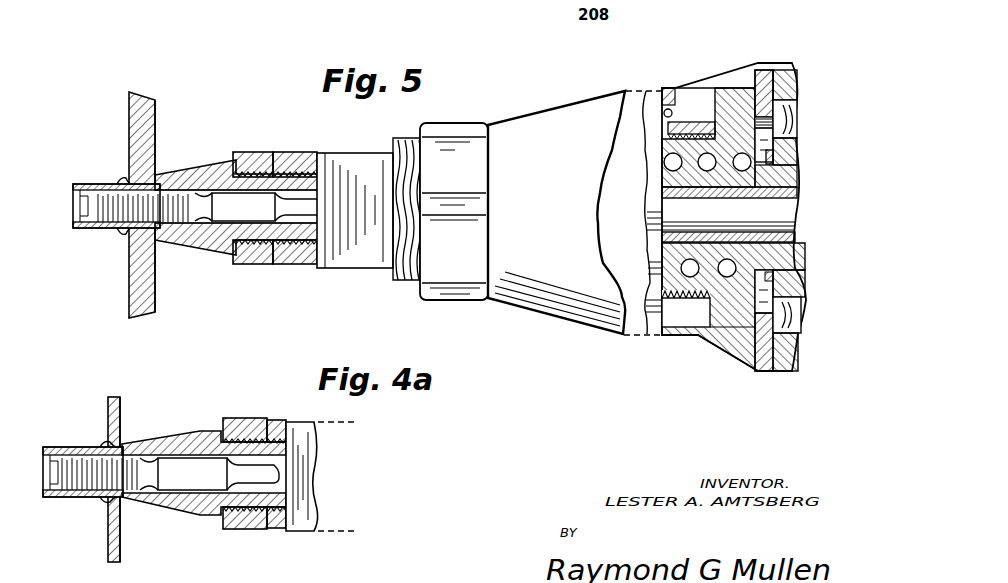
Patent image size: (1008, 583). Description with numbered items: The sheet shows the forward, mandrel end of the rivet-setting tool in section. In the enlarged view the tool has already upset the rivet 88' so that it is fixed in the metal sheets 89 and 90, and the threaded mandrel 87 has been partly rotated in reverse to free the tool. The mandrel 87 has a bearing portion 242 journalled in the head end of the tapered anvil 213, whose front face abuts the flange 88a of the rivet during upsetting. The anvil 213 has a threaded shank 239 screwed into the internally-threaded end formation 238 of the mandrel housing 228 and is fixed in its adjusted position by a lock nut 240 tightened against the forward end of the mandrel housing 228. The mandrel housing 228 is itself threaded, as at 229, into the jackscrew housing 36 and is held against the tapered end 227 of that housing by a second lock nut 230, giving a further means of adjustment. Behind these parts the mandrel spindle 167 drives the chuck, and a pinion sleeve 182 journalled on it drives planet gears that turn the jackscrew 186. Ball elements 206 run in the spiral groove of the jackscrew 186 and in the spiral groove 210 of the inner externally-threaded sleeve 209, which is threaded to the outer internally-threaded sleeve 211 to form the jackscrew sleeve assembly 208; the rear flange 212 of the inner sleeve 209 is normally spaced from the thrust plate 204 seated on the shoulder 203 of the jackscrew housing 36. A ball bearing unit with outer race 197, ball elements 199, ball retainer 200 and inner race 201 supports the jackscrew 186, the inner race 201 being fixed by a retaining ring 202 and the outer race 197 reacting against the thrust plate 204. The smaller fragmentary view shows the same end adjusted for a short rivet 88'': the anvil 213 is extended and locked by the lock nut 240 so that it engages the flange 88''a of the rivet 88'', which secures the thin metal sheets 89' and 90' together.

In FIG. 5, the metal sheet 89 is at (127, 197).
In FIG. 5, the metal sheet 90 is at (176, 203).
In FIG. 5, the upset rivet 88' is at (130, 182).
In FIG. 5, the rivet flange 88a is at (160, 174).
In FIG. 5, the anvil 213 is at (208, 228).
In FIG. 4A, the anvil 213 is at (158, 443).
In FIG. 5, the bearing portion 242 is at (222, 226).
In FIG. 5, the threaded mandrel 87 is at (250, 215).
In FIG. 4A, the threaded mandrel 87 is at (195, 482).
In FIG. 5, the lock nut 240 is at (249, 160).
In FIG. 4A, the lock nut 240 is at (236, 428).
In FIG. 5, the threaded shank 239 is at (291, 165).
In FIG. 4A, the threaded shank 239 is at (238, 523).
In FIG. 5, the internally-threaded end formation 238 is at (296, 262).
In FIG. 4A, the internally-threaded end formation 238 is at (278, 422).
In FIG. 5, the mandrel housing 228 is at (367, 172).
In FIG. 4A, the mandrel housing 228 is at (297, 517).
In FIG. 5, the threads 229 is at (408, 262).
In FIG. 5, the lock nut 230 is at (453, 140).
In FIG. 5, the tapered end 227 is at (518, 138).
In FIG. 5, the jackscrew housing 36 is at (590, 85).
In FIG. 5, the mandrel spindle 167 is at (732, 219).
In FIG. 5, the jackscrew sleeve assembly 208 is at (692, 113).
In FIG. 5, the inner externally-threaded sleeve 209 is at (733, 117).
In FIG. 5, the rear flange 212 is at (740, 112).
In FIG. 5, the thrust plate 204 is at (777, 62).
In FIG. 5, the ball elements 199 is at (799, 118).
In FIG. 5, the retaining ring 202 is at (799, 150).
In FIG. 5, the pinion sleeve 182 is at (765, 200).
In FIG. 5, the jackscrew 186 is at (770, 253).
In FIG. 5, the ball elements 206 is at (732, 268).
In FIG. 5, the inner race 201 is at (801, 281).
In FIG. 5, the ball retainer 200 is at (792, 317).
In FIG. 5, the outer race 197 is at (793, 349).
In FIG. 5, the shoulder 203 is at (760, 362).
In FIG. 5, the outer internally-threaded sleeve 211 is at (700, 308).
In FIG. 5, the spiral groove 210 is at (688, 300).
In FIG. 4A, the thin metal sheet 89' is at (95, 468).
In FIG. 4A, the thin metal sheet 90' is at (137, 462).
In FIG. 4A, the short rivet 88'' is at (90, 497).
In FIG. 4A, the rivet flange 88''a is at (136, 495).